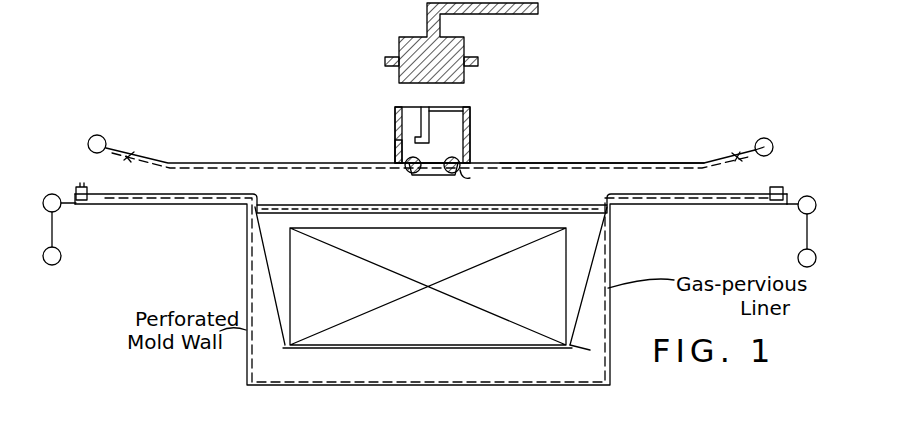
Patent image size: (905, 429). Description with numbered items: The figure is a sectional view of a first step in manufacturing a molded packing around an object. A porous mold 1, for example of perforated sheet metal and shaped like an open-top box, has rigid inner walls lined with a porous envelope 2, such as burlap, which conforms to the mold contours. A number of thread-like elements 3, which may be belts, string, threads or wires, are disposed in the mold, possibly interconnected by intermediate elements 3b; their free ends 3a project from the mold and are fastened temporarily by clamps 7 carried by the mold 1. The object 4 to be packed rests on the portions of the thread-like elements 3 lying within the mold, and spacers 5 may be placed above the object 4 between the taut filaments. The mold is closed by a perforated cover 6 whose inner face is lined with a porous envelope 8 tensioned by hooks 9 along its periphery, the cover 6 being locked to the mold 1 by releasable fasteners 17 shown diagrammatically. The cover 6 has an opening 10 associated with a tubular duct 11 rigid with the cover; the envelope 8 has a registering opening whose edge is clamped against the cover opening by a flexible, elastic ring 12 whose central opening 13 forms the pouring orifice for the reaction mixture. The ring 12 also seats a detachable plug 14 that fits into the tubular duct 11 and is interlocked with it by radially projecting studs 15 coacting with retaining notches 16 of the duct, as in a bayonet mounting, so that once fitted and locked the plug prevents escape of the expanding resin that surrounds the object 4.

The porous mold 1 is at (247, 350).
The porous envelope 2 is at (175, 198).
The thread-like elements 3 is at (262, 274).
The free ends 3a is at (105, 198).
The intermediate elements 3b is at (576, 322).
The object to be packed 4 is at (472, 322).
The spacers 5 is at (338, 207).
The cover 6 is at (288, 162).
The clamps 7 is at (80, 185).
The porous envelope 8 is at (524, 168).
The hooks 9 is at (742, 158).
The opening 10 is at (452, 178).
The tubular duct 11 is at (396, 152).
The ring 12 is at (412, 173).
The central opening 13 is at (430, 156).
The detachable plug 14 is at (399, 44).
The radially projecting studs 15 is at (486, 65).
The retaining notches 16 is at (470, 125).
The releasable fasteners 17 is at (52, 232).